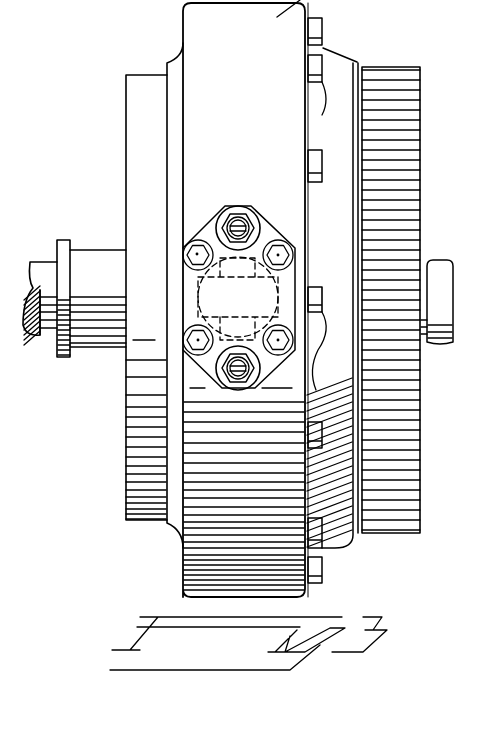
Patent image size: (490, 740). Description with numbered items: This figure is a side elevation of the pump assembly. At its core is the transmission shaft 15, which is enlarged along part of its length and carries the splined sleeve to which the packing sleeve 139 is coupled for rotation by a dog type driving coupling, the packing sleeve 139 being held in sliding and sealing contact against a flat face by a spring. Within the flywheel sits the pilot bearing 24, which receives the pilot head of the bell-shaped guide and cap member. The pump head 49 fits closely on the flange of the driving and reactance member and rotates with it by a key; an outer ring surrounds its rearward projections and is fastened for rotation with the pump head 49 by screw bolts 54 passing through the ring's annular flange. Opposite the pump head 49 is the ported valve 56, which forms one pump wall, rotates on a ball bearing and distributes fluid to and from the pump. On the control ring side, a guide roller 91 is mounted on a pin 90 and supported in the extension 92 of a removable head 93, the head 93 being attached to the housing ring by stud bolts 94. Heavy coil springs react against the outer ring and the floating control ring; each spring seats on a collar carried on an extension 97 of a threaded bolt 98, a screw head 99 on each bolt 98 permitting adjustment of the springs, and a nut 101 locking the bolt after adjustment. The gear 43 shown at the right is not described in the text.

The transmission shaft 15 is at (48, 302).
The pilot bearing 24 is at (432, 268).
The gear 43 is at (404, 85).
The pump head 49 is at (340, 78).
The screw bolts 54 is at (318, 152).
The ported valve 56 is at (143, 100).
The pin 90 is at (200, 300).
The guide roller 91 is at (32, 278).
The extension 92 is at (196, 328).
The removable head 93 is at (222, 215).
The stud bolts 94 is at (196, 240).
The extension 97 is at (30, 262).
The threaded bolt 98 is at (57, 246).
The screw head 99 is at (58, 244).
The nut 101 is at (255, 233).
The packing sleeve 139 is at (88, 268).